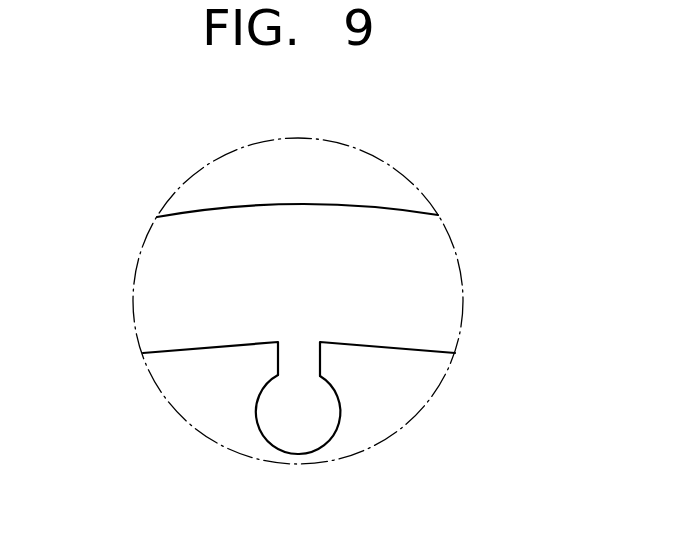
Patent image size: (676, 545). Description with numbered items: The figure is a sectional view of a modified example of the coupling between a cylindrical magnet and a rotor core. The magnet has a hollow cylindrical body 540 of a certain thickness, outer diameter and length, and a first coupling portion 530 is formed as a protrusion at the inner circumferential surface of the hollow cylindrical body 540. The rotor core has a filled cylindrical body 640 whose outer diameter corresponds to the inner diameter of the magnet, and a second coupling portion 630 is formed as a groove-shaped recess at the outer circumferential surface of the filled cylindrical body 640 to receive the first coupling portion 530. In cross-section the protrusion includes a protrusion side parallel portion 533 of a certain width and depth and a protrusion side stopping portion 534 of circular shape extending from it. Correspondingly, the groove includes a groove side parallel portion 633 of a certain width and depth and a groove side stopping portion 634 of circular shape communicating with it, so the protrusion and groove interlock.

The hollow cylindrical body 540 is at (372, 232).
The first coupling portion 530 is at (161, 398).
The protrusion side parallel portion 533 is at (292, 356).
The protrusion side stopping portion 534 is at (277, 413).
The second coupling portion 630 is at (450, 389).
The groove side parallel portion 633 is at (325, 333).
The groove side stopping portion 634 is at (343, 400).
The filled cylindrical body 640 is at (237, 433).